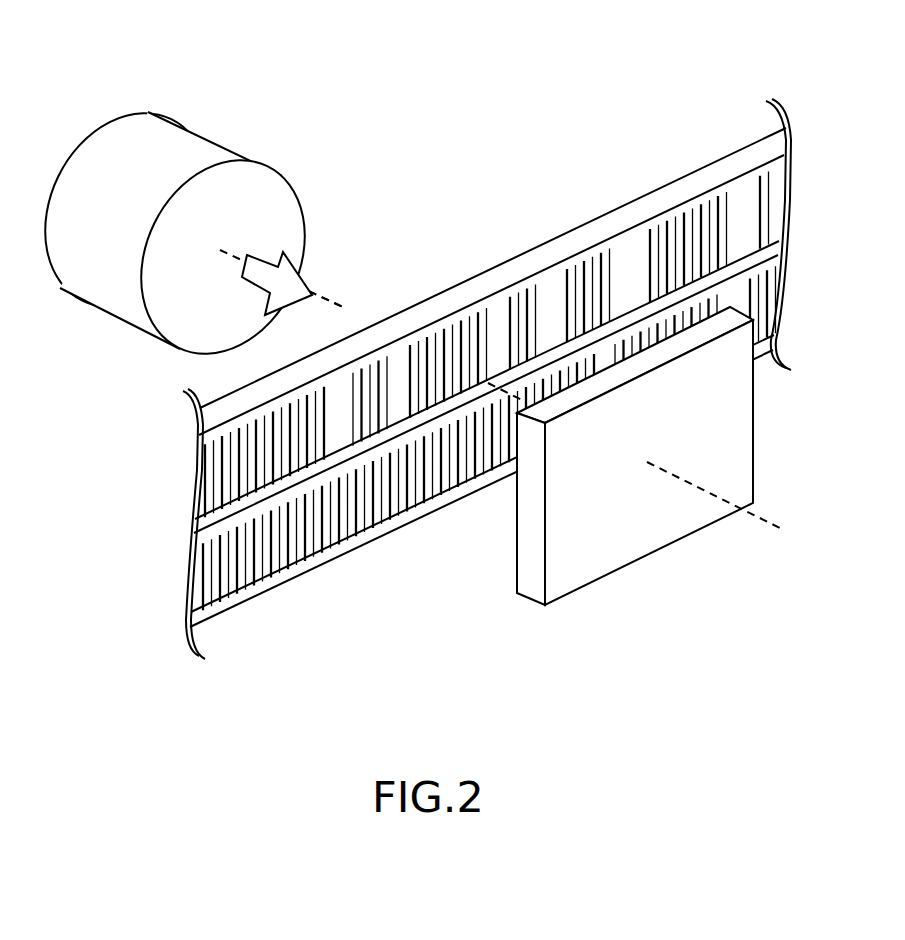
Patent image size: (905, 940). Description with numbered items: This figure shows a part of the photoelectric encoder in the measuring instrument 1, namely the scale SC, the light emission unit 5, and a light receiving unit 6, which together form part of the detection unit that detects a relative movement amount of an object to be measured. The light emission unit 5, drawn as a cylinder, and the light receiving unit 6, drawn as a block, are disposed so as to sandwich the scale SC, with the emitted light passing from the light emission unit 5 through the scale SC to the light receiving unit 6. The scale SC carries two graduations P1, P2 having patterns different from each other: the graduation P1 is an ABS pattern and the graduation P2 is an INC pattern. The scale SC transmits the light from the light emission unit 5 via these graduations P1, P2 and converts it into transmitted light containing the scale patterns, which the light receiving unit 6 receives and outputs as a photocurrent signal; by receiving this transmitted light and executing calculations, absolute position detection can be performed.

The measuring instrument 1 is at (429, 349).
The light emission unit 5 is at (186, 140).
The light receiving unit 6 is at (735, 433).
The scale SC is at (504, 272).
The graduation P1 is at (210, 492).
The graduation P2 is at (202, 585).